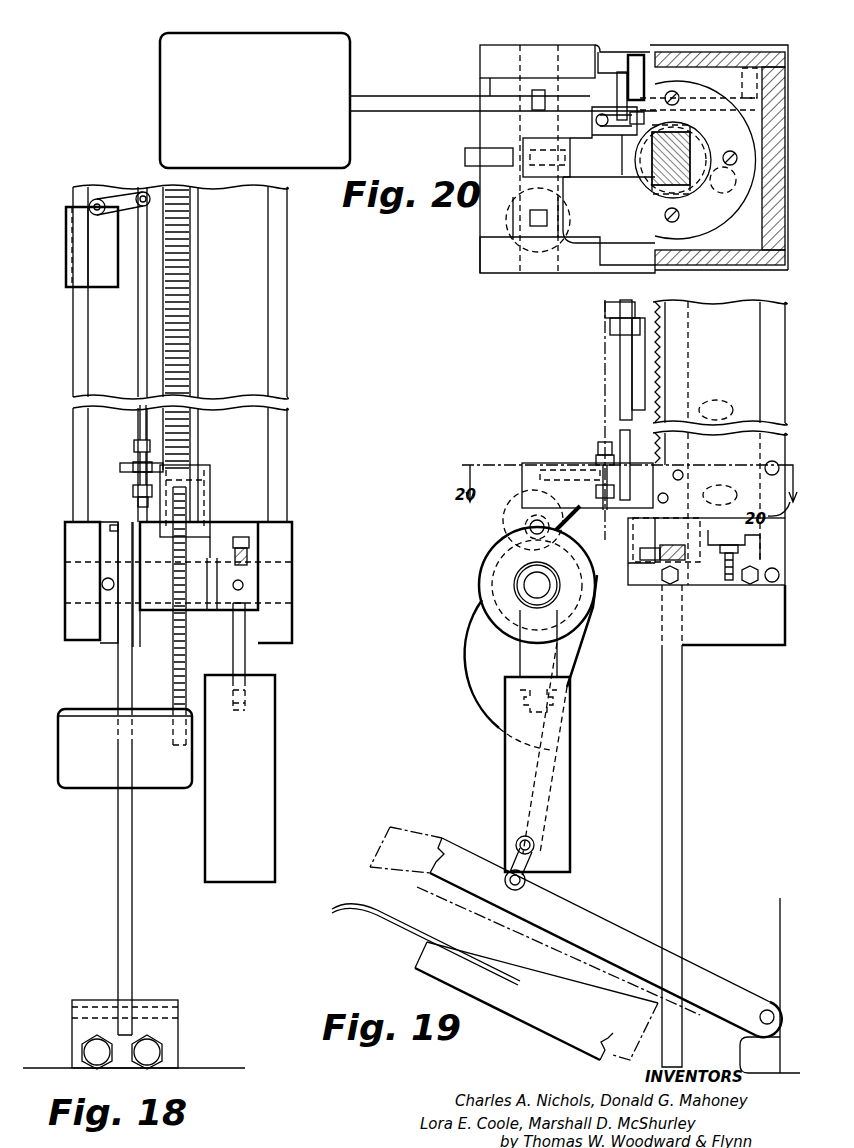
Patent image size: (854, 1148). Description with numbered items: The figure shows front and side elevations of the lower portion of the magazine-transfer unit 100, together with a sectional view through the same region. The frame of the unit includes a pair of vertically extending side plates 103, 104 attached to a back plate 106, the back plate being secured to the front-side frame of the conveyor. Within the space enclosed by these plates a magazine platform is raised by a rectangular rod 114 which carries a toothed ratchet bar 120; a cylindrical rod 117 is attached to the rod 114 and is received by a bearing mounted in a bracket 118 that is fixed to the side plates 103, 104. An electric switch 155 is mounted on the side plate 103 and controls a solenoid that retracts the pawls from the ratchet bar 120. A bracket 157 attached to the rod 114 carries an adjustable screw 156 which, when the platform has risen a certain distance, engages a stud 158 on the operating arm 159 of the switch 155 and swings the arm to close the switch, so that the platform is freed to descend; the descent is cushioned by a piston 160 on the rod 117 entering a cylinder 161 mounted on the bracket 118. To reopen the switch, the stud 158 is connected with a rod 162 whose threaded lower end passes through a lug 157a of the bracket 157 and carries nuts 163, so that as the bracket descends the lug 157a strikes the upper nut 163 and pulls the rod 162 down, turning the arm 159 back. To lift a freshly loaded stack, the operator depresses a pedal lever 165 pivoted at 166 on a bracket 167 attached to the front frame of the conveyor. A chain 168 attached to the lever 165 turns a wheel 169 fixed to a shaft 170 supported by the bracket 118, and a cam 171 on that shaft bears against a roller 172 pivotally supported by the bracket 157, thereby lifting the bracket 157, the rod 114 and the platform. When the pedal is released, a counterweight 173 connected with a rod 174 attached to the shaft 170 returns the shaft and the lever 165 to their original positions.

In FIG. 18, the magazine-transfer unit 100 is at (73, 190).
In FIG. 20, the magazine-transfer unit 100 is at (715, 45).
In FIG. 19, the magazine-transfer unit 100 is at (442, 557).
In FIG. 18, the vertical side plate 103 is at (73, 326).
In FIG. 20, the vertical side plate 103 is at (745, 52).
In FIG. 18, the vertical side plate 104 is at (280, 320).
In FIG. 20, the vertical side plate 104 is at (740, 265).
In FIG. 19, the vertical side plate 104 is at (772, 432).
In FIG. 18, the back plate 106 is at (262, 289).
In FIG. 20, the back plate 106 is at (762, 232).
In FIG. 19, the back plate 106 is at (720, 442).
In FIG. 18, the rod 114 is at (199, 272).
In FIG. 20, the rod 114 is at (690, 150).
In FIG. 19, the rod 114 is at (690, 406).
In FIG. 19, the rod 117 is at (682, 712).
In FIG. 18, the bracket 118 is at (65, 545).
In FIG. 20, the bracket 118 is at (640, 270).
In FIG. 19, the bracket 118 is at (756, 637).
In FIG. 18, the ratchet bar 120 is at (186, 250).
In FIG. 20, the ratchet bar 120 is at (655, 185).
In FIG. 19, the ratchet bar 120 is at (657, 386).
In FIG. 18, the electric switch 155 is at (95, 251).
In FIG. 20, the electric switch 155 is at (636, 55).
In FIG. 19, the electric switch 155 is at (640, 356).
In FIG. 18, the adjustable screw 156 is at (138, 452).
In FIG. 20, the adjustable screw 156 is at (600, 114).
In FIG. 19, the adjustable screw 156 is at (600, 448).
In FIG. 18, the bracket 157 is at (196, 474).
In FIG. 20, the bracket 157 is at (612, 180).
In FIG. 19, the bracket 157 is at (555, 464).
In FIG. 18, the lug 157a is at (120, 471).
In FIG. 20, the lug 157a is at (607, 138).
In FIG. 19, the lug 157a is at (597, 478).
In FIG. 18, the stud 158 is at (143, 192).
In FIG. 20, the stud 158 is at (622, 138).
In FIG. 19, the stud 158 is at (604, 310).
In FIG. 18, the operating arm 159 is at (122, 198).
In FIG. 19, the operating arm 159 is at (610, 332).
In FIG. 19, the piston 160 is at (690, 530).
In FIG. 20, the cylinder 161 is at (655, 212).
In FIG. 19, the cylinder 161 is at (634, 540).
In FIG. 18, the rod 162 is at (140, 326).
In FIG. 20, the rod 162 is at (637, 118).
In FIG. 19, the rod 162 is at (620, 376).
In FIG. 18, the nuts 163 is at (134, 498).
In FIG. 19, the nuts 163 is at (602, 499).
In FIG. 18, the pedal lever 165 is at (63, 708).
In FIG. 20, the pedal lever 165 is at (348, 42).
In FIG. 19, the pedal lever 165 is at (452, 845).
In FIG. 18, the pivot 166 is at (72, 1020).
In FIG. 19, the pivot 166 is at (767, 1010).
In FIG. 18, the bracket 167 is at (72, 1002).
In FIG. 20, the bracket 167 is at (724, 180).
In FIG. 19, the bracket 167 is at (745, 1050).
In FIG. 18, the chain 168 is at (119, 676).
In FIG. 20, the chain 168 is at (552, 80).
In FIG. 19, the chain 168 is at (572, 665).
In FIG. 18, the wheel 169 is at (140, 634).
In FIG. 20, the wheel 169 is at (480, 90).
In FIG. 19, the wheel 169 is at (480, 573).
In FIG. 18, the shaft 170 is at (70, 598).
In FIG. 20, the shaft 170 is at (527, 50).
In FIG. 19, the shaft 170 is at (527, 586).
In FIG. 18, the cam 171 is at (186, 646).
In FIG. 20, the cam 171 is at (466, 153).
In FIG. 19, the cam 171 is at (466, 660).
In FIG. 18, the roller 172 is at (183, 512).
In FIG. 20, the roller 172 is at (526, 150).
In FIG. 19, the roller 172 is at (510, 528).
In FIG. 18, the counterweight 173 is at (276, 743).
In FIG. 20, the counterweight 173 is at (506, 220).
In FIG. 19, the counterweight 173 is at (570, 796).
In FIG. 18, the rod 174 is at (247, 668).
In FIG. 19, the rod 174 is at (520, 666).